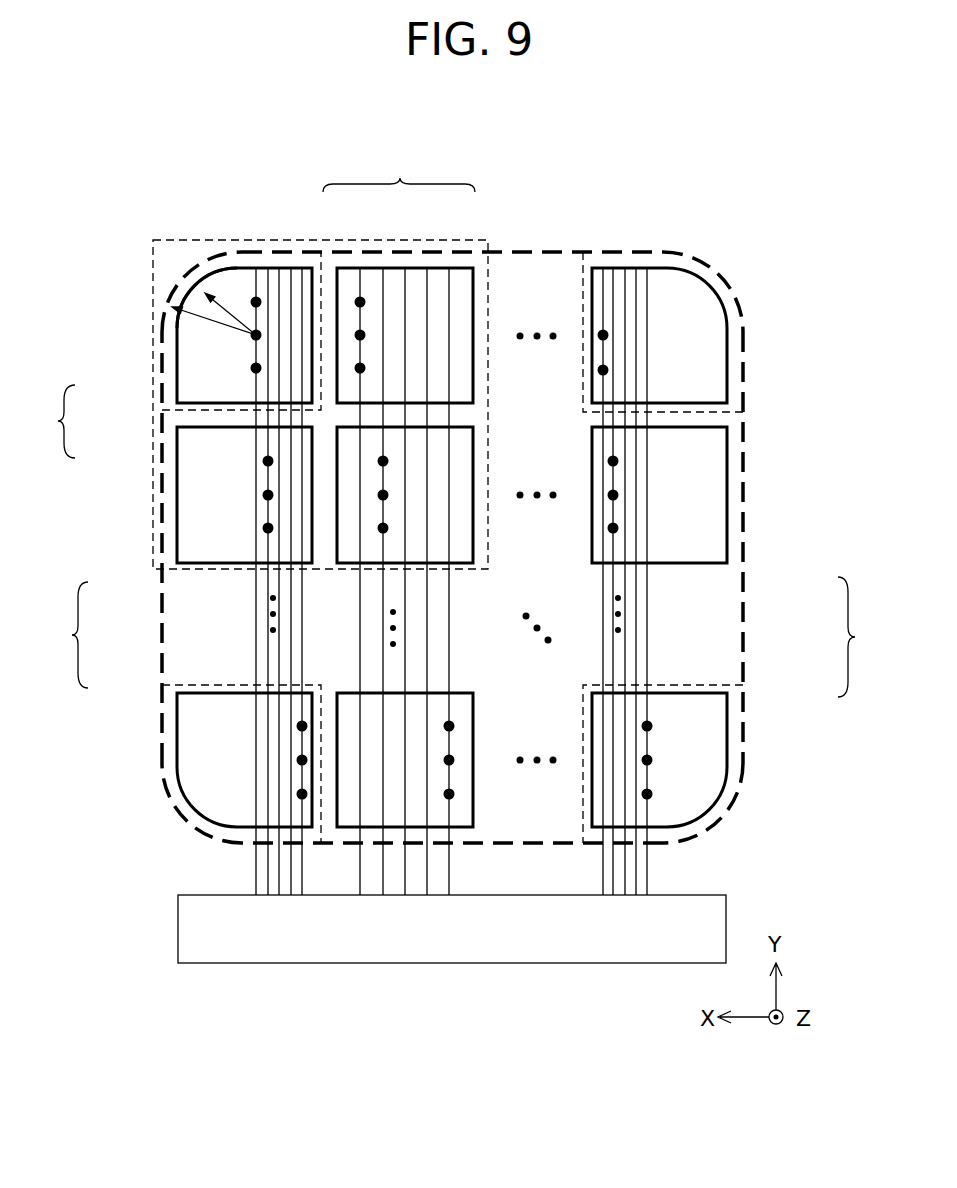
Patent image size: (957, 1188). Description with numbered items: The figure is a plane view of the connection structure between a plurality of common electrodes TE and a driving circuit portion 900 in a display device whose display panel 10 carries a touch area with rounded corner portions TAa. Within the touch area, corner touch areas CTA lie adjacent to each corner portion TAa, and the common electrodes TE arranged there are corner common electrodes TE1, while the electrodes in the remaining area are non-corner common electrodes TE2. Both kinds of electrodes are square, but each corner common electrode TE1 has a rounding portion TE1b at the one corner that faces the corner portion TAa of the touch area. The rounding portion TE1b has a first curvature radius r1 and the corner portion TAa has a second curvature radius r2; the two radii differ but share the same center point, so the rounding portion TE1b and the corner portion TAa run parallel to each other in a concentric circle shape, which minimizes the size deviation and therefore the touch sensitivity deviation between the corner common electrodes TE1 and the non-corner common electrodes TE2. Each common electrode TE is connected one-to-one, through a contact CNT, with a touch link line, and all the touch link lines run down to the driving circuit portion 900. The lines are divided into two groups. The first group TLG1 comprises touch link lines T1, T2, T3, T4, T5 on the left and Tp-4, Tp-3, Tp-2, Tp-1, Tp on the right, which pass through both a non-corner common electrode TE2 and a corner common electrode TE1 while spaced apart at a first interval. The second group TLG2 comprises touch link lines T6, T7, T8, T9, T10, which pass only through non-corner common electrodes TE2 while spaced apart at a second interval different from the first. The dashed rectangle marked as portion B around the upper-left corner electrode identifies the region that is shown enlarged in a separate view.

The display panel 10 is at (625, 250).
The rounding portion TE1b is at (199, 275).
The portion B is at (217, 240).
The corner touch area CTA is at (320, 262).
The touch link line T1 is at (256, 592).
The touch link line T2 is at (268, 612).
The touch link line T3 is at (279, 640).
The touch link line T4 is at (291, 646).
The touch link line T5 is at (302, 656).
The touch link line T6 is at (360, 283).
The touch link line T7 is at (383, 285).
The touch link line T8 is at (405, 285).
The touch link line T9 is at (428, 283).
The touch link line T10 is at (449, 283).
The touch link line Tp is at (647, 582).
The touch link line Tp-1 is at (636, 601).
The touch link line Tp-2 is at (625, 640).
The touch link line Tp-3 is at (613, 652).
The touch link line Tp-4 is at (603, 658).
The first group TLG1 is at (464, 637).
The second group TLG2 is at (399, 399).
The corner common electrode TE1 is at (177, 392).
The non-corner common electrode TE2 is at (475, 300).
The common electrode TE is at (51, 421).
The corner portion TAa is at (178, 303).
The contact CNT is at (252, 335).
The first curvature radius r1 is at (230, 314).
The second curvature radius r2 is at (214, 327).
The driving circuit portion 900 is at (503, 963).